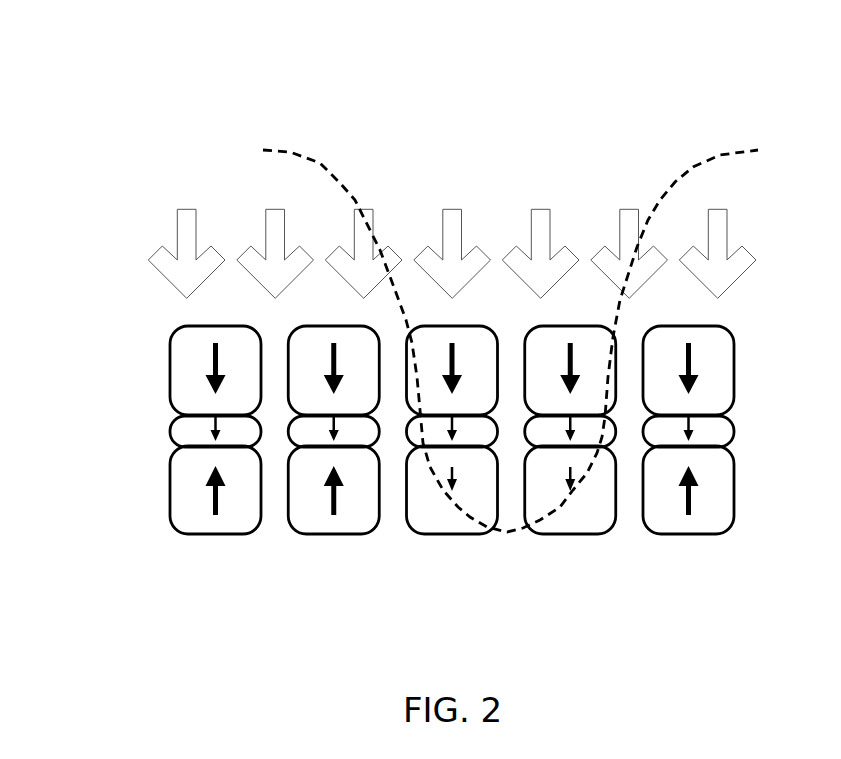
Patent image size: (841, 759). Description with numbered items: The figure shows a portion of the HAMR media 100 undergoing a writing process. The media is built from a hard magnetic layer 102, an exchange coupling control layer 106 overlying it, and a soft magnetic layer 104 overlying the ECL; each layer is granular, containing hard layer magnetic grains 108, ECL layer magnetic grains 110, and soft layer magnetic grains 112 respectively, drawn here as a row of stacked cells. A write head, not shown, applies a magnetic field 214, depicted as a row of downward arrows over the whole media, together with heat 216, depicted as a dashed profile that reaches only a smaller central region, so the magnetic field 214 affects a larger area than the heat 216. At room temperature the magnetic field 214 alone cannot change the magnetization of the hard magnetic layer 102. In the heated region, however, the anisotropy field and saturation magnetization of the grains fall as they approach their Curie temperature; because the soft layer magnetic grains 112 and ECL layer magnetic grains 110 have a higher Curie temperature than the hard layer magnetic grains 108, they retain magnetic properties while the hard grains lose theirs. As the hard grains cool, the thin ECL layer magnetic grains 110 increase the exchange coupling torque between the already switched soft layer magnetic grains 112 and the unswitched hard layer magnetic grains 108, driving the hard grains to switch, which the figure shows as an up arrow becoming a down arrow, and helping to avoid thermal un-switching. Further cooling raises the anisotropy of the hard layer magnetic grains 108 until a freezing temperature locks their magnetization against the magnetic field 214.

The HAMR media 100 is at (97, 114).
The hard magnetic layer 102 is at (147, 487).
The soft magnetic layer 104 is at (120, 369).
The exchange coupling control layer 106 is at (132, 428).
The hard layer magnetic grains 108 is at (433, 510).
The ECL layer magnetic grains 110 is at (477, 433).
The soft layer magnetic grains 112 is at (482, 403).
The magnetic field 214 is at (100, 262).
The heat 216 is at (320, 163).